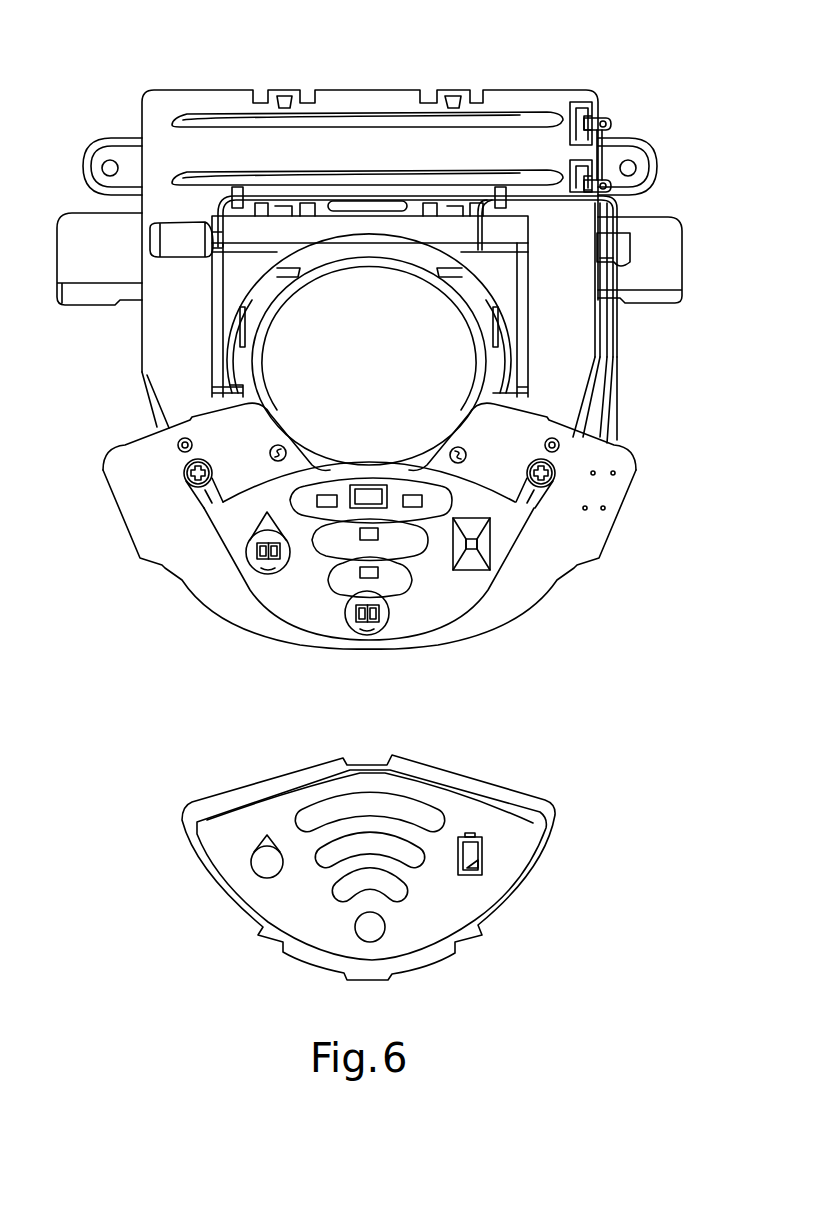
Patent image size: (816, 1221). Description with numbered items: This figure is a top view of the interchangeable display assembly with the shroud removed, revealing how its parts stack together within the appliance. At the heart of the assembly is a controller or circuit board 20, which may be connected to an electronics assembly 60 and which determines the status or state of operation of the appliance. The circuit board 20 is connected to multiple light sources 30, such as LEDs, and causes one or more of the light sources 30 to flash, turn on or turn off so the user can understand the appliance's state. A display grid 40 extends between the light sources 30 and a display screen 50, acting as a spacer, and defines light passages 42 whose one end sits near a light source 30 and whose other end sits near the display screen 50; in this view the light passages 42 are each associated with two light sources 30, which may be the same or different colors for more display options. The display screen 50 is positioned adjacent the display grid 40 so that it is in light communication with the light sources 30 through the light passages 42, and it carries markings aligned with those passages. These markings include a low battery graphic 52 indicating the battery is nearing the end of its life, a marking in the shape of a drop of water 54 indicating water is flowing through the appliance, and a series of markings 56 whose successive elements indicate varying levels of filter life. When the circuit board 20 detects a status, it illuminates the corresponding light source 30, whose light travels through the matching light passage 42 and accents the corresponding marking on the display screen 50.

The circuit board 20 is at (605, 462).
The light sources 30 is at (267, 540).
The display grid 40 is at (238, 583).
The light passages 42 is at (367, 630).
The display screen 50 is at (507, 753).
The low battery graphic 52 is at (470, 848).
The drop of water 54 is at (267, 853).
The series of markings 56 is at (372, 925).
The electronics assembly 60 is at (369, 266).